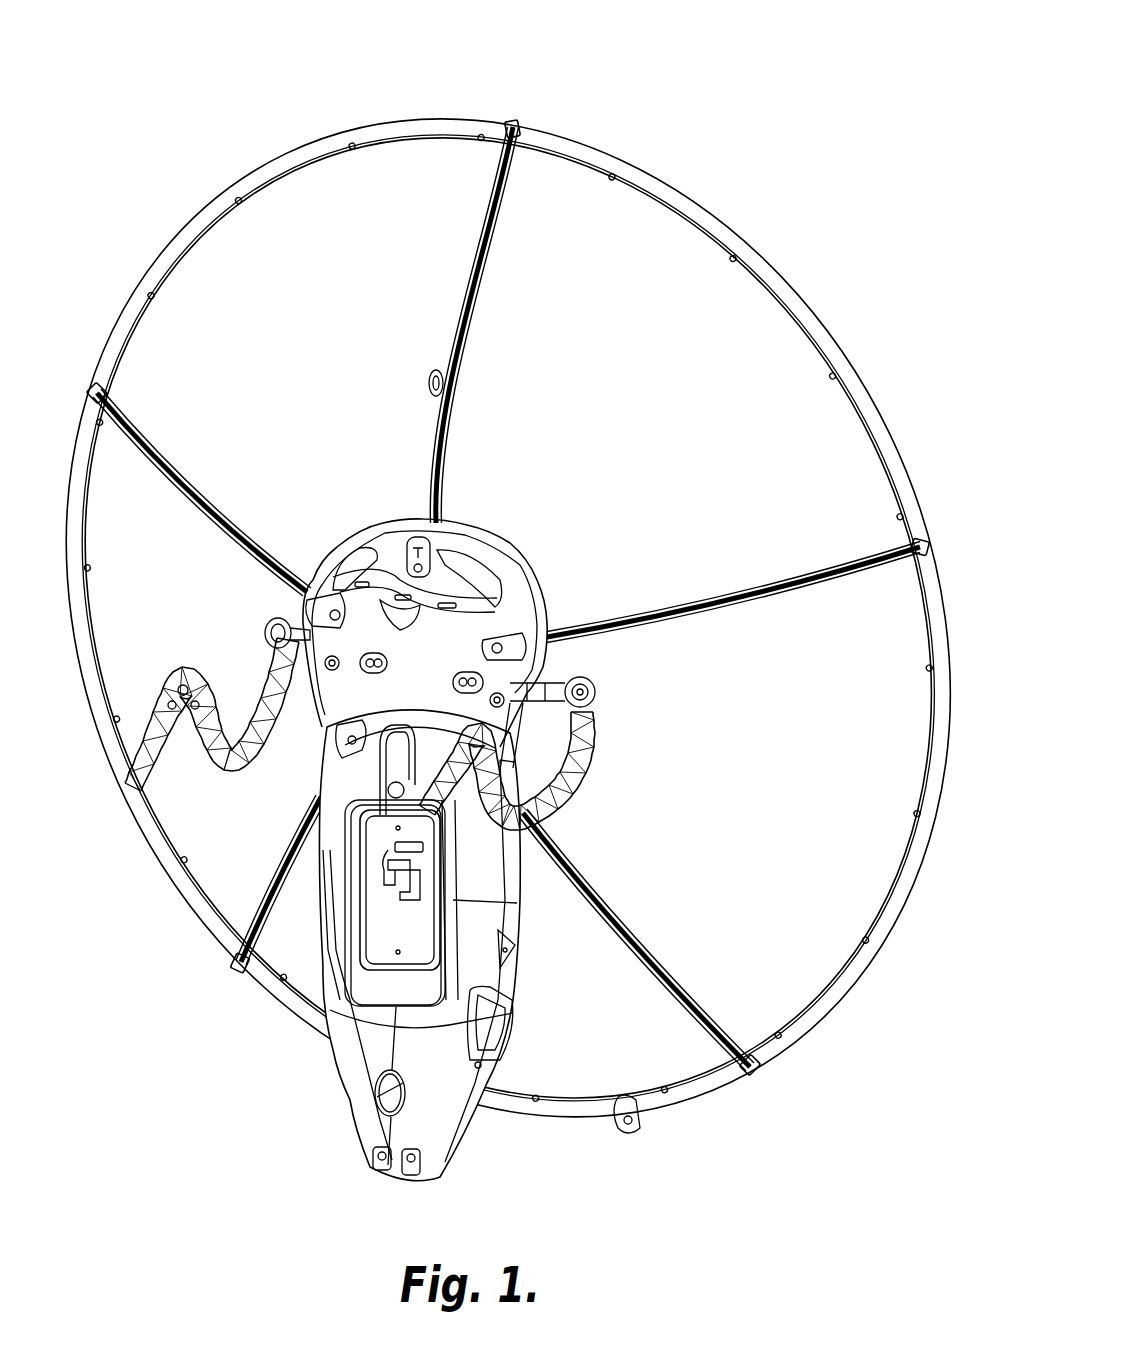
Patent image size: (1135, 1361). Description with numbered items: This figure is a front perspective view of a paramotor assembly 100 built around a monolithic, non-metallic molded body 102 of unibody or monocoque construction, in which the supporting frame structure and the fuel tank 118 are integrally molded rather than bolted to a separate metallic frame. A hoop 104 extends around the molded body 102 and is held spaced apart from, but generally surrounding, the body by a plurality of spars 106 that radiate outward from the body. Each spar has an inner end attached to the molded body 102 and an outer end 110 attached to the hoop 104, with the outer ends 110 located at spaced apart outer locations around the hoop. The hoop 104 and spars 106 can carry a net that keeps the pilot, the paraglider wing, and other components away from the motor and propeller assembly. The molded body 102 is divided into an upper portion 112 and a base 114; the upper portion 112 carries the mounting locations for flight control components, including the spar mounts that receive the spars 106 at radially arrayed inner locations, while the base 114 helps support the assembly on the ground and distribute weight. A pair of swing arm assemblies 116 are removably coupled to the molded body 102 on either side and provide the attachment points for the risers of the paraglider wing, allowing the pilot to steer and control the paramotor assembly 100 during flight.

The paramotor assembly 100 is at (718, 46).
The molded body 102 is at (362, 1080).
The hoop 104 is at (592, 152).
The spars 106 is at (470, 293).
The outer end 110 is at (511, 124).
The upper portion 112 is at (445, 630).
The base 114 is at (430, 1160).
The swing arm assemblies 116 is at (275, 680).
The fuel tank 118 is at (510, 995).